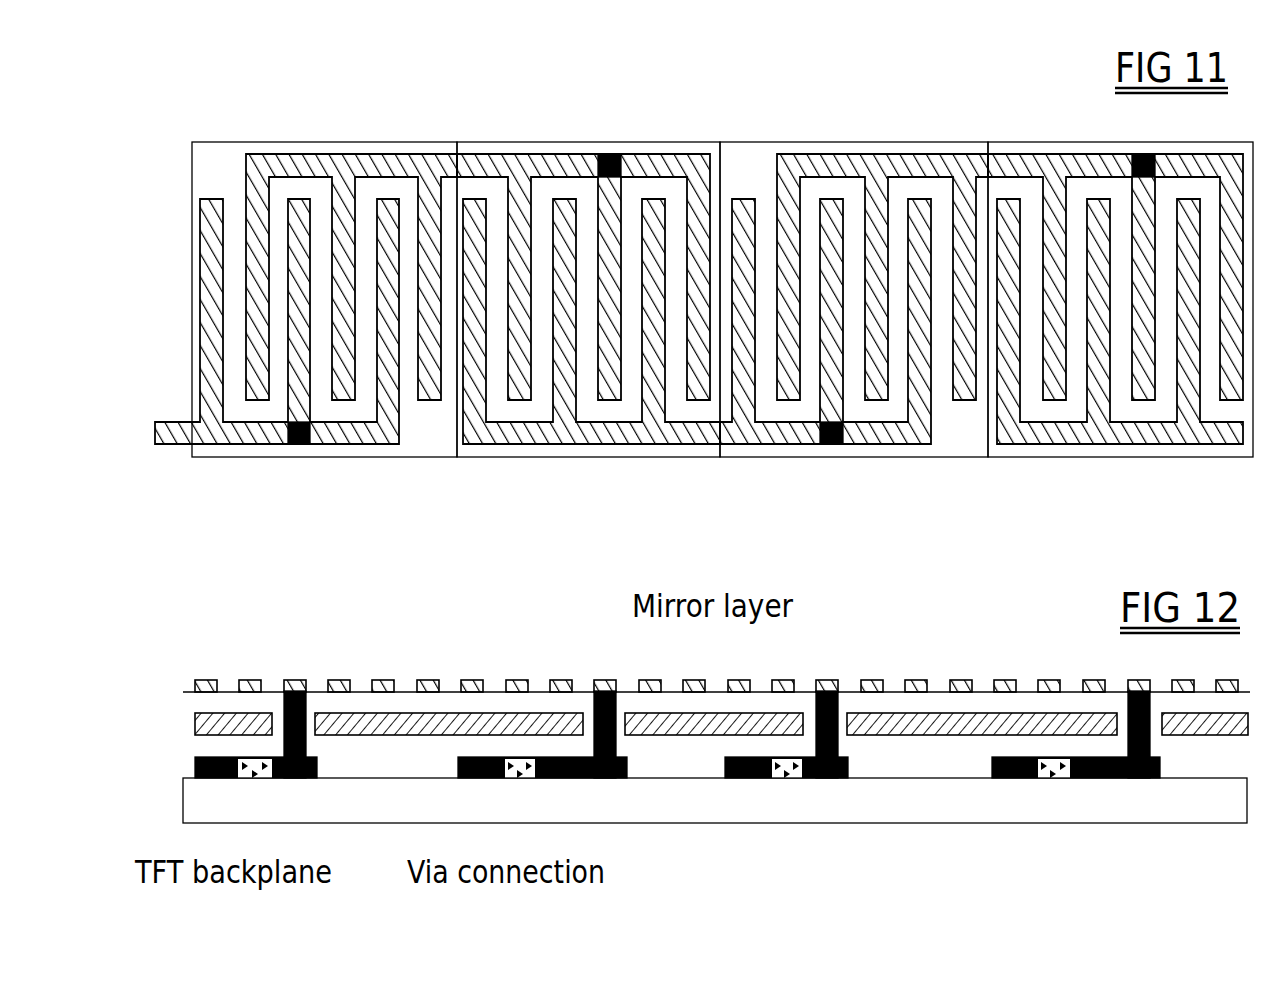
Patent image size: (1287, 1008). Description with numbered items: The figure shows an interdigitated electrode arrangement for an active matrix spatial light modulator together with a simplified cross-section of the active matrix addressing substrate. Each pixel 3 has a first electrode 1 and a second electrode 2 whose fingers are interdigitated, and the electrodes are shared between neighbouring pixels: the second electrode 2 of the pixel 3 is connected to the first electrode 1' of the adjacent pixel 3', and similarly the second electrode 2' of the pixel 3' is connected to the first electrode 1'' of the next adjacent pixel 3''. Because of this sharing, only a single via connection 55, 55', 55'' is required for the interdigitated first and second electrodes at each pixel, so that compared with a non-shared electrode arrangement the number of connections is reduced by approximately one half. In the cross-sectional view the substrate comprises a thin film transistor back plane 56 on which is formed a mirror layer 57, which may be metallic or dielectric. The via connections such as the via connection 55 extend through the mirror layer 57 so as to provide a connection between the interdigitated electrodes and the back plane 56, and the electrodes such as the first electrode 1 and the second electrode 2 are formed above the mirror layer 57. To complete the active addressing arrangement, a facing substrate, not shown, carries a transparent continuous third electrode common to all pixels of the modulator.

In FIG. 11, the first electrode 1 is at (277, 376).
In FIG. 12, the first electrode 1 is at (262, 623).
In FIG. 11, the second electrode 2 is at (351, 342).
In FIG. 12, the second electrode 2 is at (330, 612).
In FIG. 11, the pixel 3 is at (324, 261).
In FIG. 11, the first electrode of adjacent pixel 1' is at (583, 356).
In FIG. 12, the first electrode of adjacent pixel 1' is at (599, 667).
In FIG. 11, the second electrode of adjacent pixel 2' is at (591, 379).
In FIG. 12, the second electrode of adjacent pixel 2' is at (533, 624).
In FIG. 11, the adjacent pixel 3' is at (588, 261).
In FIG. 11, the first electrode of third pixel 1'' is at (825, 363).
In FIG. 11, the third pixel 3'' is at (854, 261).
In FIG. 11, the via connection 55 is at (281, 491).
In FIG. 12, the via connection 55 is at (403, 806).
In FIG. 11, the via connection of adjacent pixel 55' is at (651, 121).
In FIG. 11, the via connection of third pixel 55'' is at (888, 476).
In FIG. 12, the thin film transistor back plane 56 is at (228, 802).
In FIG. 12, the mirror layer 57 is at (670, 712).